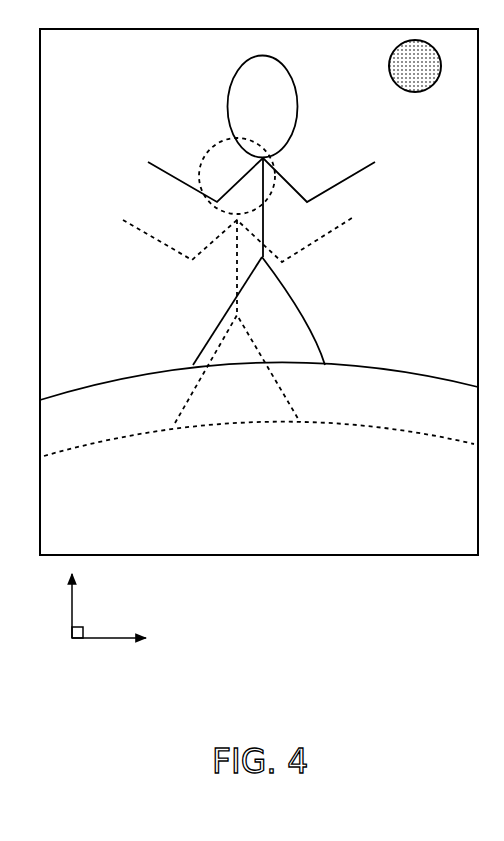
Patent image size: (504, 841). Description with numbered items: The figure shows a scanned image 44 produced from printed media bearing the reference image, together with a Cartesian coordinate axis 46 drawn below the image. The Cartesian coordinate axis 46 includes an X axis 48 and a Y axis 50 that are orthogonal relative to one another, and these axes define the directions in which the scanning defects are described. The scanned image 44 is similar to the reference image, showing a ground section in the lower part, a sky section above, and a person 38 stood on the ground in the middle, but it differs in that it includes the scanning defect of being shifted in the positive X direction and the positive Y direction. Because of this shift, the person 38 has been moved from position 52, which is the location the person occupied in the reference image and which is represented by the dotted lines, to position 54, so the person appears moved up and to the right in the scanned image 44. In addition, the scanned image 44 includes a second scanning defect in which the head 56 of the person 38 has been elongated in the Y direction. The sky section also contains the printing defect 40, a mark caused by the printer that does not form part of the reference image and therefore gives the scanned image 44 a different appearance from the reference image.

The person 38 is at (264, 200).
The printing defect 40 is at (415, 92).
The scanned image 44 is at (370, 594).
The Cartesian coordinate axis 46 is at (107, 660).
The X axis 48 is at (108, 641).
The Y axis 50 is at (73, 608).
The position 52 is at (142, 236).
The position 54 is at (367, 168).
The head 56 is at (277, 92).